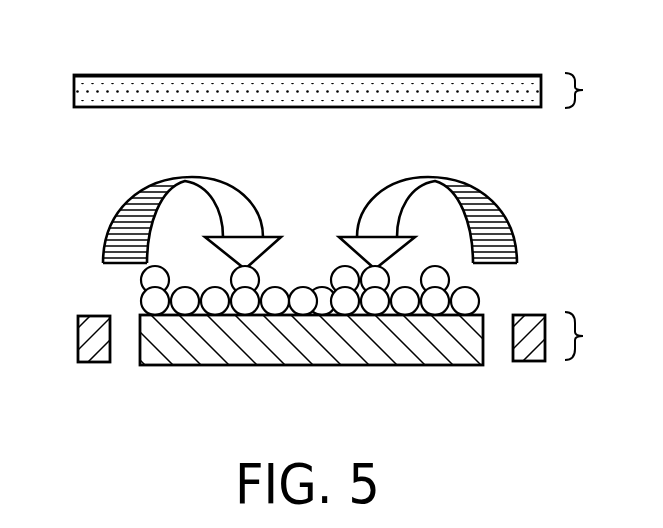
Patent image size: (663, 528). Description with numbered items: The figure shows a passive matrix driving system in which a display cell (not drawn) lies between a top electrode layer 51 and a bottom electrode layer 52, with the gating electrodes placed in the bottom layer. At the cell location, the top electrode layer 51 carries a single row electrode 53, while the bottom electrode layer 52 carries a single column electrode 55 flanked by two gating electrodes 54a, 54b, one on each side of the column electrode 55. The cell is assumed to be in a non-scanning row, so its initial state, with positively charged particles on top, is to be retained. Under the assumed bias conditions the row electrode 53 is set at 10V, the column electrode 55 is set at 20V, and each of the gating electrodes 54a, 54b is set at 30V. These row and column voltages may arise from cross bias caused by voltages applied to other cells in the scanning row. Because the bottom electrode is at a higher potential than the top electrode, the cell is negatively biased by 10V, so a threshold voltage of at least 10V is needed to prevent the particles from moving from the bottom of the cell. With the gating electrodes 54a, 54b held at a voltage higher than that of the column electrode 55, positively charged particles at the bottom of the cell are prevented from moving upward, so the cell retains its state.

The row electrode voltage 10V is at (372, 75).
The row electrode 53 is at (218, 75).
The top electrode layer 51 is at (591, 90).
The column electrode 55 is at (245, 365).
The column electrode voltage 20V is at (362, 365).
The gating electrode 54a is at (77, 316).
The gating electrode 54b is at (546, 313).
The gating electrode voltage 30V is at (92, 363).
The bottom electrode layer 52 is at (591, 336).